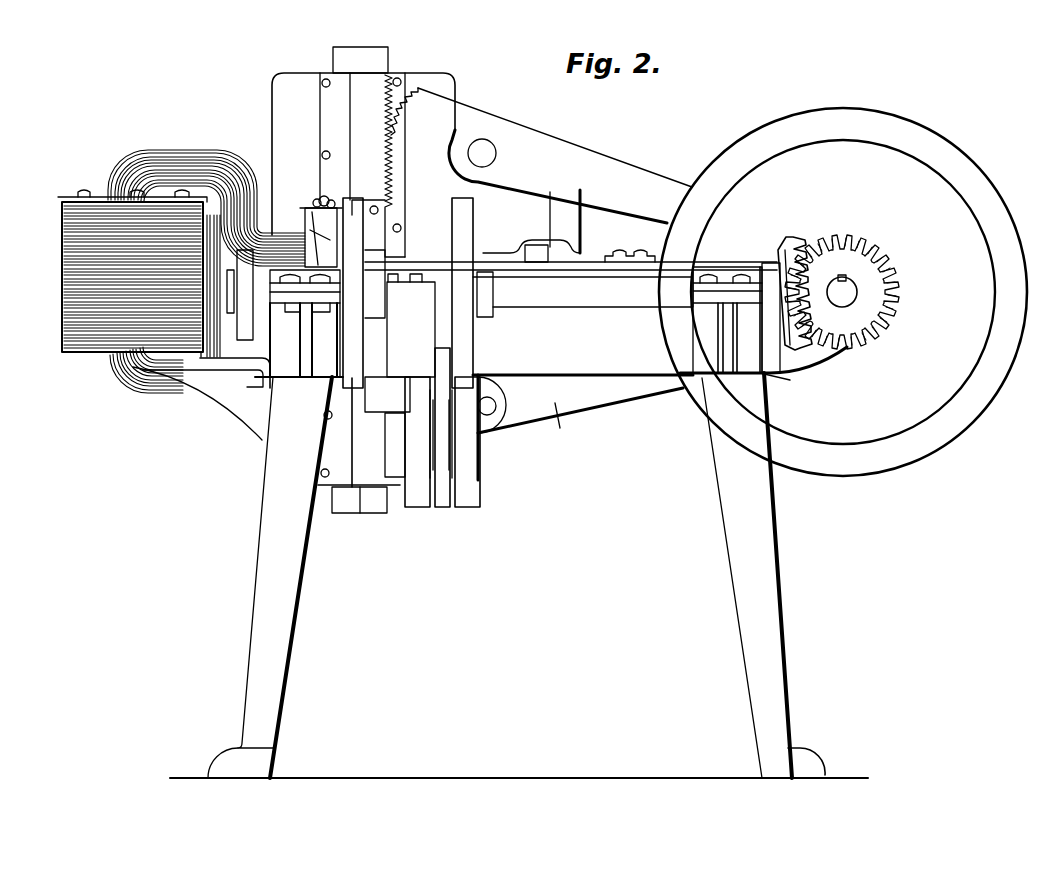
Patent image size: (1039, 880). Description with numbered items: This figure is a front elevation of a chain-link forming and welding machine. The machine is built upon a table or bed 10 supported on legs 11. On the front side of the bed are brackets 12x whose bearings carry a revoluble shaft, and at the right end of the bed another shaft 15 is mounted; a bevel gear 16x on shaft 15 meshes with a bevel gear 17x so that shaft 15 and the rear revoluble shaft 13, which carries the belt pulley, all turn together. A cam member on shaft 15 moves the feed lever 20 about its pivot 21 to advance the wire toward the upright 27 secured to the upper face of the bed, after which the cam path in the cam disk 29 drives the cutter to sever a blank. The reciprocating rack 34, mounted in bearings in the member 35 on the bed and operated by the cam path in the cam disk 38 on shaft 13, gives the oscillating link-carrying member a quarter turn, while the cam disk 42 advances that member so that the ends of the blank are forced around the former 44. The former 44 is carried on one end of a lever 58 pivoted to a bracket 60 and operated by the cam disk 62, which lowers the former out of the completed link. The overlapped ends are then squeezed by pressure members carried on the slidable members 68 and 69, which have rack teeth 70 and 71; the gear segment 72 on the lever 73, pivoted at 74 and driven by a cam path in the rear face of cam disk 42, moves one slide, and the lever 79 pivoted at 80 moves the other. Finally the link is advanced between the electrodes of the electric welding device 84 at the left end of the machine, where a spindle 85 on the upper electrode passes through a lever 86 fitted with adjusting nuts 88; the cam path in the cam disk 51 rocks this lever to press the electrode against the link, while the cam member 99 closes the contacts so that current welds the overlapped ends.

The table or bed 10 is at (620, 394).
The legs 11 is at (283, 657).
The brackets 12x is at (297, 366).
The revoluble shaft 13 is at (573, 297).
The revoluble shaft 15 is at (844, 290).
The bevel gear 16x is at (796, 372).
The bevel gear 17x is at (778, 354).
The feed lever 20 is at (595, 266).
The pivot 21 is at (622, 261).
The upright 27 is at (292, 85).
The cam disk 29 is at (905, 440).
The reciprocating rack 34 is at (536, 250).
The member 35 is at (514, 254).
The cam disk 38 is at (578, 228).
The cam disk 42 is at (851, 474).
The former 44 is at (392, 420).
The cam disk 51 is at (347, 376).
The lever 58 is at (437, 364).
The bracket 60 is at (426, 492).
The cam disk 62 is at (470, 347).
The slidable member 68 is at (368, 78).
The slidable member 69 is at (366, 472).
The rack teeth 70 is at (390, 100).
The rack teeth 71 is at (384, 492).
The gear segment 72 is at (405, 120).
The lever 73 is at (565, 166).
The pivot 74 is at (488, 150).
The lever 79 is at (567, 427).
The pivot 80 is at (491, 412).
The electric welding device 84 is at (181, 271).
The spindle 85 is at (330, 198).
The lever 86 is at (322, 220).
The adjusting nuts 88 is at (316, 200).
The cam member 99 is at (238, 338).